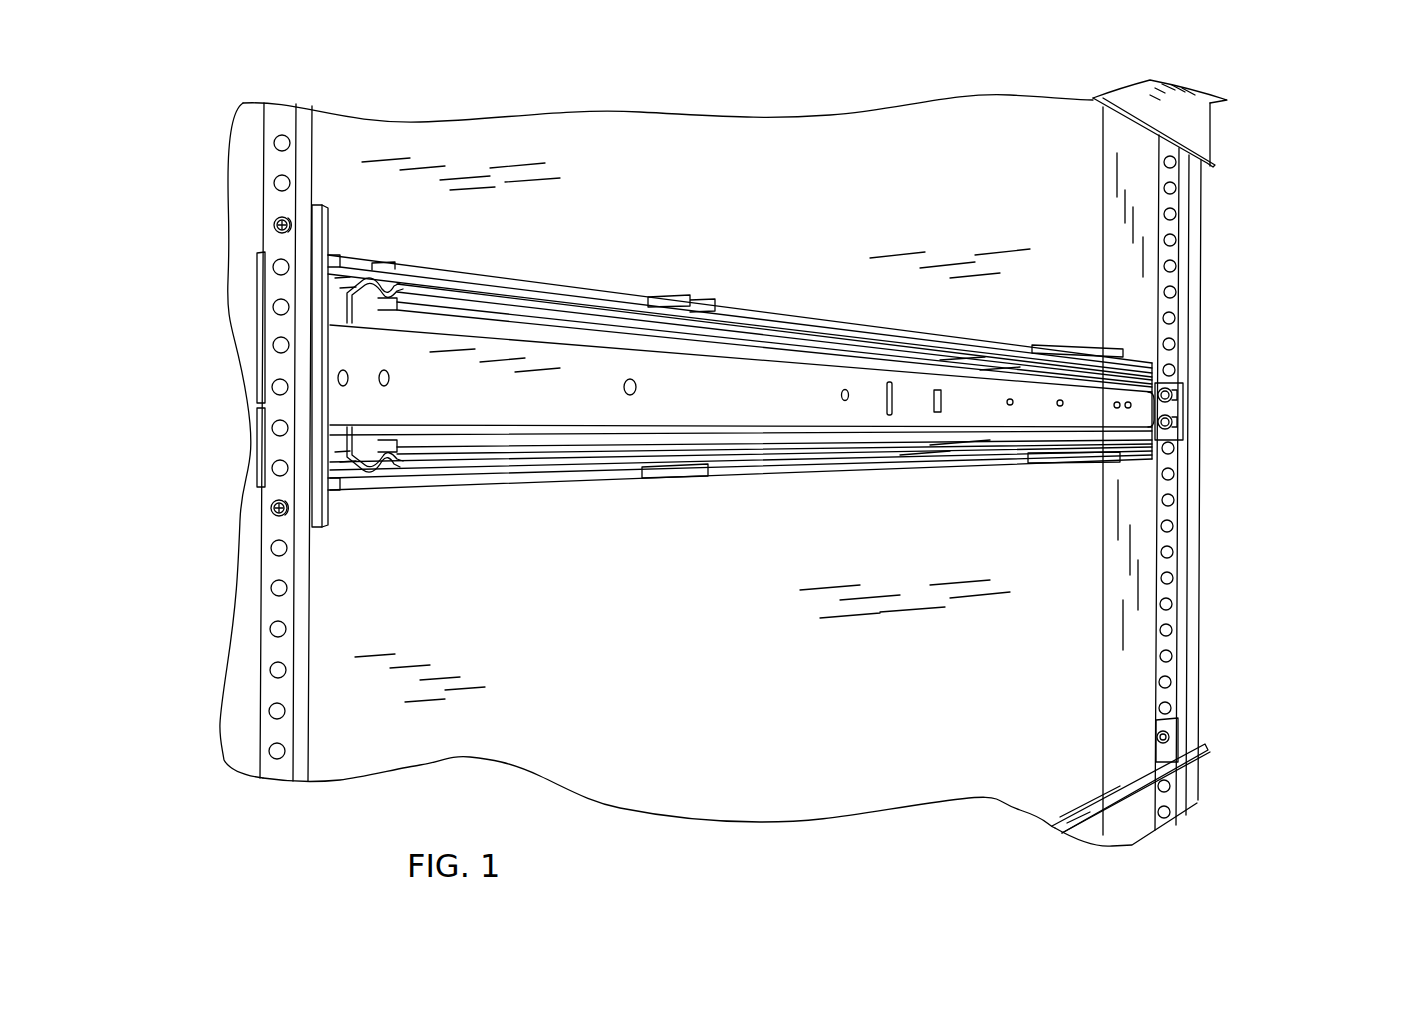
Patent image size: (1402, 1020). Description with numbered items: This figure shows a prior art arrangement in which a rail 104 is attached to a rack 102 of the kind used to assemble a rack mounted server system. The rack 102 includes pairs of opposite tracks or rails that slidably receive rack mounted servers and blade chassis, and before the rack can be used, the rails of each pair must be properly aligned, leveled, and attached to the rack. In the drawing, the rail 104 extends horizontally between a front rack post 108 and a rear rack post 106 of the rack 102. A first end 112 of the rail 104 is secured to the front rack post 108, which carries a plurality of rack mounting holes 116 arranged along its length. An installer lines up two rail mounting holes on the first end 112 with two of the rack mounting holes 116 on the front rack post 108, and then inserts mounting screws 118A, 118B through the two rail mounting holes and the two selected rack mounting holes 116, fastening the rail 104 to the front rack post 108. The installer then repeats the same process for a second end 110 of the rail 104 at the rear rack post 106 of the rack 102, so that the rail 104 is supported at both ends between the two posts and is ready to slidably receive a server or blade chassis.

The rack 102 is at (1253, 93).
The rail 104 is at (1032, 410).
The rear rack post 106 is at (1176, 292).
The front rack post 108 is at (262, 320).
The second end 110 is at (1181, 415).
The first end 112 is at (323, 507).
The rack mounting holes 116 is at (276, 183).
The mounting screw 118A is at (274, 225).
The mounting screw 118B is at (271, 508).